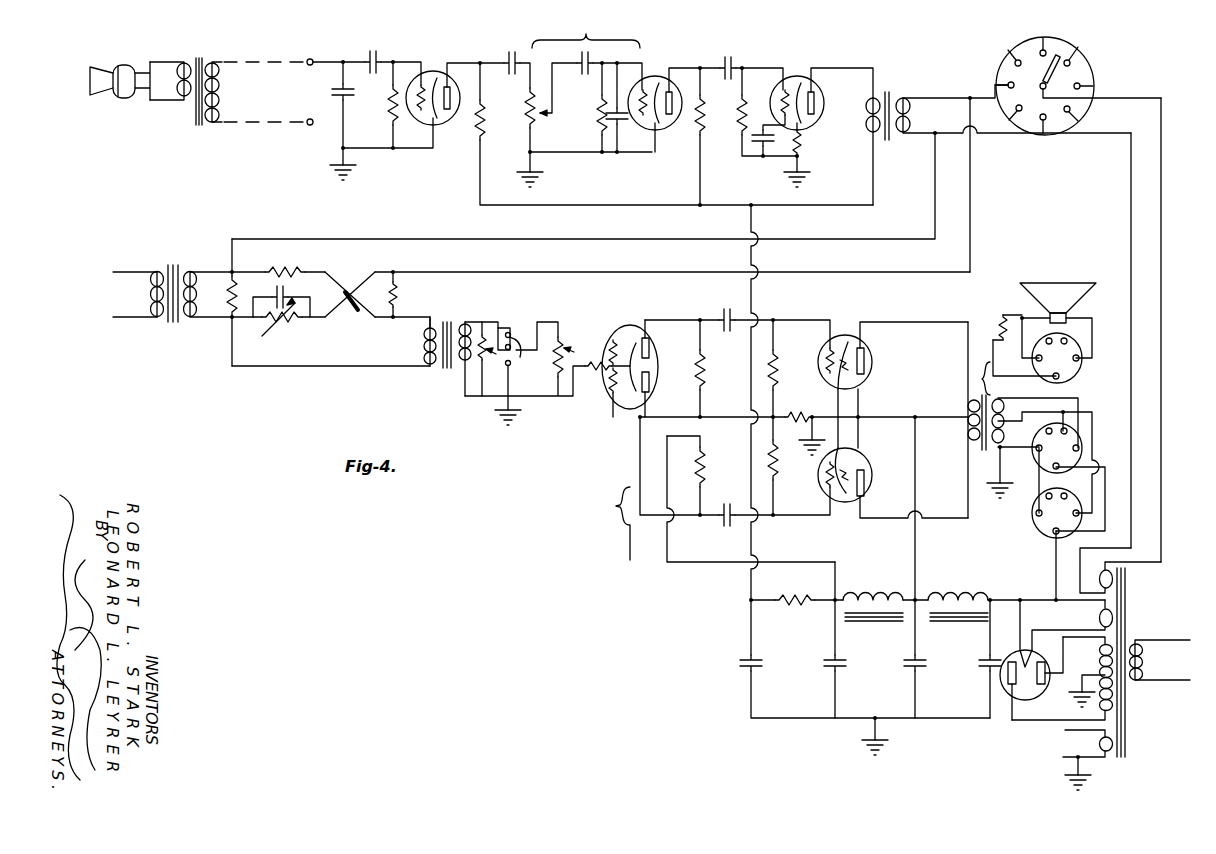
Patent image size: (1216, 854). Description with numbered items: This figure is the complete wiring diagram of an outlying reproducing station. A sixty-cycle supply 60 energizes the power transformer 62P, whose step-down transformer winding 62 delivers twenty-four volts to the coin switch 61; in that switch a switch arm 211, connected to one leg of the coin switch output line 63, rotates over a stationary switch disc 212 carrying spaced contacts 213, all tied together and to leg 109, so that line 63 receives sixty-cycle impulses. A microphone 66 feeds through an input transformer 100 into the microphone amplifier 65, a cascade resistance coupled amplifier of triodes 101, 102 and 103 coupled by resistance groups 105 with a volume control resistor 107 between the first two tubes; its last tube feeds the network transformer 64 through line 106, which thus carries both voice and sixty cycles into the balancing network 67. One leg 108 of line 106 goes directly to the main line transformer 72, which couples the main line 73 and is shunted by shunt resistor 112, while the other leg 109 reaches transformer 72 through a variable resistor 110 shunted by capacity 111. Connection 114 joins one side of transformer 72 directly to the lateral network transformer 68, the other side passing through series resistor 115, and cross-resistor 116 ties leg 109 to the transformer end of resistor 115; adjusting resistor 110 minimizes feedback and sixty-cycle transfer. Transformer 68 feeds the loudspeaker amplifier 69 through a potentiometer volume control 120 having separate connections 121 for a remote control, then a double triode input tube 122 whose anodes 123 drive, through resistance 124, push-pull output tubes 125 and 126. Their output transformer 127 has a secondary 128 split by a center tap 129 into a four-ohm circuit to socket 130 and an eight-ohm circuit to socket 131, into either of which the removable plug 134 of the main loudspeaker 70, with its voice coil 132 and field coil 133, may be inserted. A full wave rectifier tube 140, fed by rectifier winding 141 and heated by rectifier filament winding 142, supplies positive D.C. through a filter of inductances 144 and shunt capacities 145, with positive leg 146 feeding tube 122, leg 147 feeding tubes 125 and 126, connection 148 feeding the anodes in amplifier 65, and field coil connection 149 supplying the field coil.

The microphone 66 is at (130, 98).
The input transformer 100 is at (201, 128).
The triode 101 is at (433, 72).
The microphone amplifier 65 is at (586, 32).
The volume control resistor 107 is at (532, 113).
The resistance group 105 is at (600, 120).
The triode 102 is at (658, 76).
The triode 103 is at (798, 76).
The network transformer 64 is at (890, 98).
The coin switch 61 is at (1052, 76).
The spaced contacts 213 is at (1034, 46).
The switch arm 211 is at (1078, 47).
The stationary switch disc 212 is at (1070, 78).
The coin switch output line 63 is at (1160, 148).
The line 106 is at (873, 252).
The leg 108 is at (255, 238).
The leg 109 is at (433, 272).
The connection 114 is at (335, 366).
The main line 73 is at (125, 317).
The main line transformer 72 is at (171, 268).
The shunt resistor 112 is at (228, 302).
The series resistor 115 is at (290, 268).
The capacity 111 is at (287, 297).
The variable resistor 110 is at (281, 320).
The balancing network 67 is at (350, 228).
The cross-resistor 116 is at (398, 295).
The lateral network transformer 68 is at (448, 368).
The potentiometer volume control 120 is at (492, 367).
The separate connections 121 is at (524, 376).
The double triode input tube 122 is at (648, 357).
The anodes 123 is at (650, 379).
The resistance 124 is at (744, 382).
The push-pull output tube 125 is at (873, 357).
The push-pull output tube 126 is at (861, 462).
The output transformer 127 is at (1010, 420).
The secondary 128 is at (1004, 408).
The center tap 129 is at (999, 425).
The leg 147 is at (915, 538).
The loudspeaker amplifier 69 is at (605, 523).
The main loudspeaker 70 is at (1054, 295).
The voice coil 132 is at (1066, 318).
The field coil 133 is at (996, 318).
The removable plug 134 is at (1080, 370).
The 8-ohm socket 131 is at (1063, 456).
The 4-ohm socket 130 is at (1040, 523).
The field coil connection 149 is at (1056, 571).
The positive leg 146 is at (677, 564).
The connection 148 is at (757, 580).
The inductances 144 is at (972, 599).
The shunt capacities 145 is at (752, 668).
The power transformer 62P is at (1126, 627).
The step-down transformer winding 62 is at (1113, 580).
The rectifier filament winding 142 is at (1112, 617).
The rectifier winding 141 is at (1113, 707).
The 60-cycle supply 60 is at (1158, 638).
The full wave rectifier tube 140 is at (1018, 700).